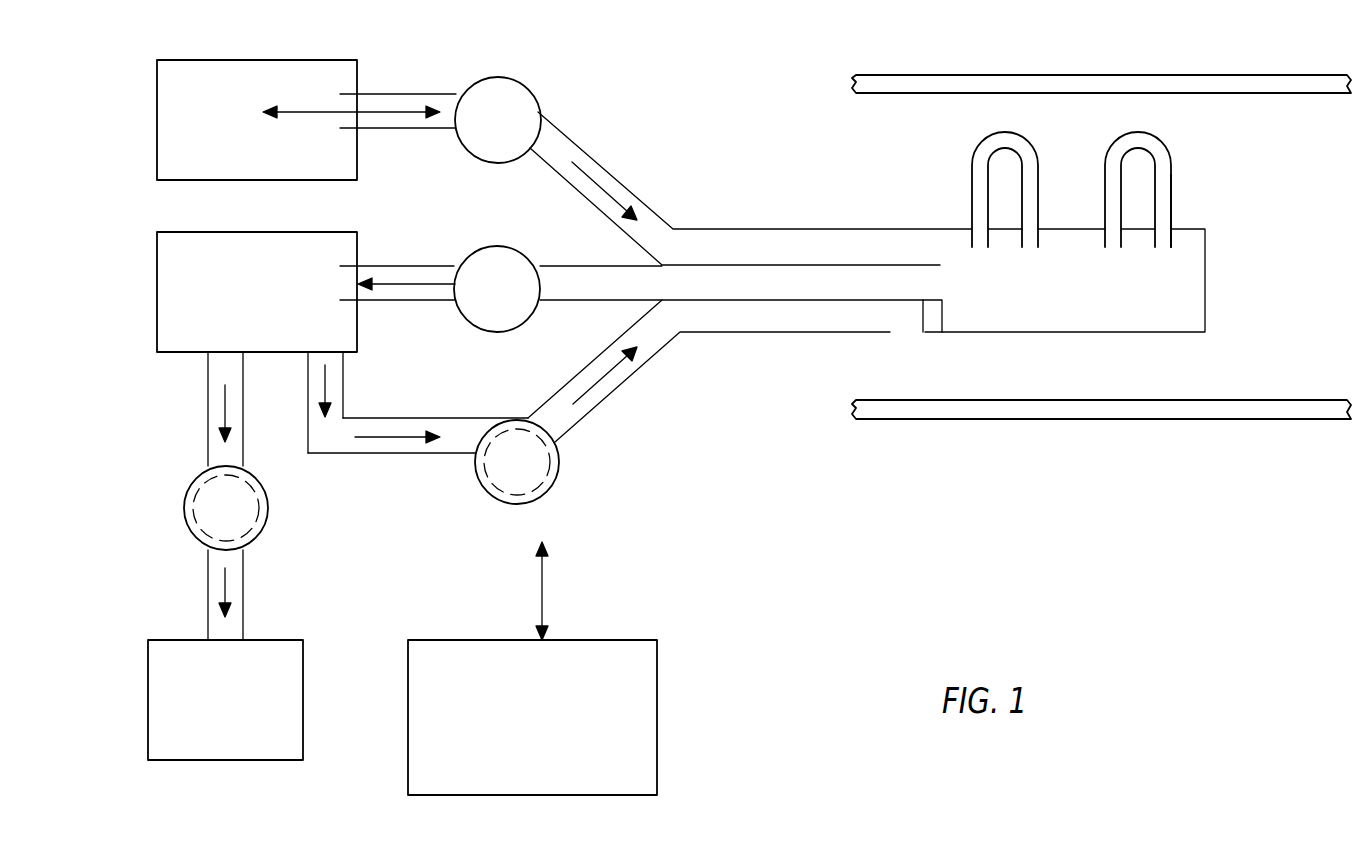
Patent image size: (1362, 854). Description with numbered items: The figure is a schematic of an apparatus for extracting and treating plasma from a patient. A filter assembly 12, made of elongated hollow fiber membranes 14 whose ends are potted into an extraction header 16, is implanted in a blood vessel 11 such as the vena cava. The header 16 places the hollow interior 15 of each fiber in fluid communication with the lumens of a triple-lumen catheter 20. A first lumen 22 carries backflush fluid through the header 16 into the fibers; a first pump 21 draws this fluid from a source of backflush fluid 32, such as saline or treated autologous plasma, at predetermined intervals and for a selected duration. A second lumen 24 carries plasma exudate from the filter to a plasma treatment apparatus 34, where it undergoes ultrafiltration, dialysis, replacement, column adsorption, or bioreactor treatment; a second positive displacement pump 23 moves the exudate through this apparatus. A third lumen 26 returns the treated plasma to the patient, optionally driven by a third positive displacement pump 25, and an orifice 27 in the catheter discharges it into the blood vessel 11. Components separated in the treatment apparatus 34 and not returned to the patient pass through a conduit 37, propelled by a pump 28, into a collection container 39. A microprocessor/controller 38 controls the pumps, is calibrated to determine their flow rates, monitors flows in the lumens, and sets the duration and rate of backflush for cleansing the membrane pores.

The blood vessel 11 is at (1045, 75).
The filter assembly 12 is at (1041, 178).
The hollow fiber membranes 14 is at (1162, 143).
The hollow interior 15 is at (1172, 183).
The extraction header 16 is at (1205, 288).
The triple-lumen catheter 20 is at (785, 368).
The first pump 21 is at (513, 77).
The first lumen 22 is at (745, 228).
The second positive displacement pump 23 is at (490, 245).
The second lumen 24 is at (593, 302).
The third positive displacement pump 25 is at (555, 480).
The third lumen 26 is at (723, 333).
The orifice 27 is at (902, 318).
The pump 28 is at (267, 522).
The source of backflush fluid 32 is at (203, 60).
The plasma treatment apparatus 34 is at (192, 352).
The conduit 37 is at (208, 445).
The microprocessor/controller 38 is at (657, 717).
The collection container 39 is at (148, 697).